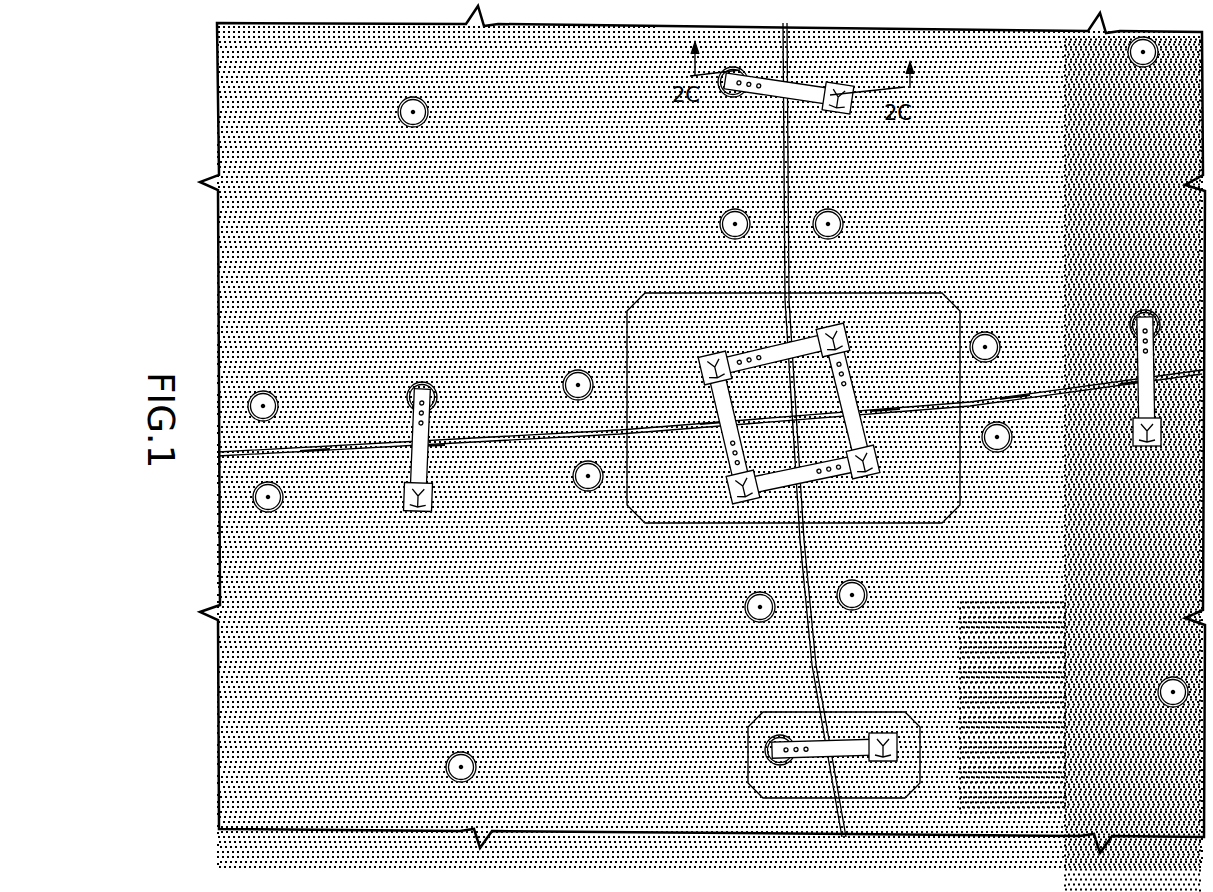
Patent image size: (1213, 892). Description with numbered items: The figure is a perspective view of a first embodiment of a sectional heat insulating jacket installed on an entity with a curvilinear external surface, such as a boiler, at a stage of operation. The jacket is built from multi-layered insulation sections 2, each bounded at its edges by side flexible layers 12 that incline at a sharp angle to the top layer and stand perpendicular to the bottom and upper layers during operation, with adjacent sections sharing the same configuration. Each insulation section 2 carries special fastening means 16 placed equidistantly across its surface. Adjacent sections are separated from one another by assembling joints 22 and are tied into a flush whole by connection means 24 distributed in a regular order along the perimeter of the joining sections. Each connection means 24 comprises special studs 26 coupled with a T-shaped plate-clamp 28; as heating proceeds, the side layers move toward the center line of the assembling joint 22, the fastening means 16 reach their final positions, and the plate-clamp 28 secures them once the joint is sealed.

The multi-layered insulation section 2 is at (585, 148).
The side flexible layer 12 is at (780, 210).
The fastening means 16 is at (424, 100).
The assembling joint 22 is at (778, 178).
The connection means 24 is at (802, 96).
The special stud 26 is at (744, 92).
The plate-clamp 28 is at (750, 762).